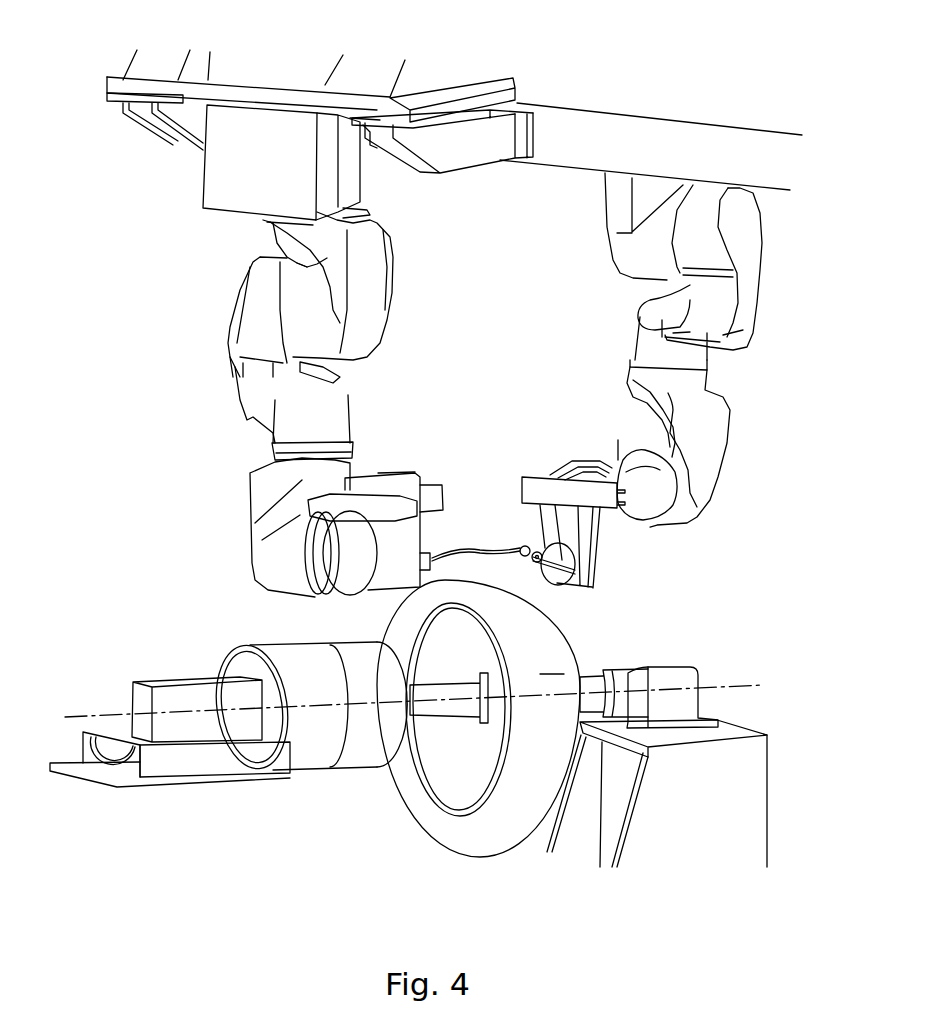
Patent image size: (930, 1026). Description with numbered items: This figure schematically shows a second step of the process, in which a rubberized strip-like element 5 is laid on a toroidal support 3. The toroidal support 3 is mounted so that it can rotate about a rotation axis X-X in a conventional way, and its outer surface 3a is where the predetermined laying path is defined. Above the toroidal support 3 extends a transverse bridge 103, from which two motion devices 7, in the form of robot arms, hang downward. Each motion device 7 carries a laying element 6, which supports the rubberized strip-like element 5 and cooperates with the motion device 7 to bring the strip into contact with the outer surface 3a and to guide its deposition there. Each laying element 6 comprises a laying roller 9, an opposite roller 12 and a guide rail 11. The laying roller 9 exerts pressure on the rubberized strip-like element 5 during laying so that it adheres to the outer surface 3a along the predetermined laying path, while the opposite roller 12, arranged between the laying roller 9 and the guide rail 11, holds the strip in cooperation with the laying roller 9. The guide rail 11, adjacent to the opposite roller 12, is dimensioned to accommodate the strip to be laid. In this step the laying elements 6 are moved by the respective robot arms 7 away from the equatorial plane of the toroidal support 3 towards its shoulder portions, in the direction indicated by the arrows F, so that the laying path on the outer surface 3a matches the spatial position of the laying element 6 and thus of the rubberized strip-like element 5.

The transverse bridge 103 is at (338, 66).
The motion device 7 is at (230, 378).
The rubberized strip-like element 5 is at (500, 548).
The arrows F is at (432, 538).
The laying roller 9 is at (605, 543).
The laying element 6 is at (527, 537).
The guide rail 11 is at (580, 587).
The opposite roller 12 is at (527, 537).
The toroidal support 3 is at (512, 748).
The outer surface 3a is at (552, 663).
The rotation axis X is at (82, 715).